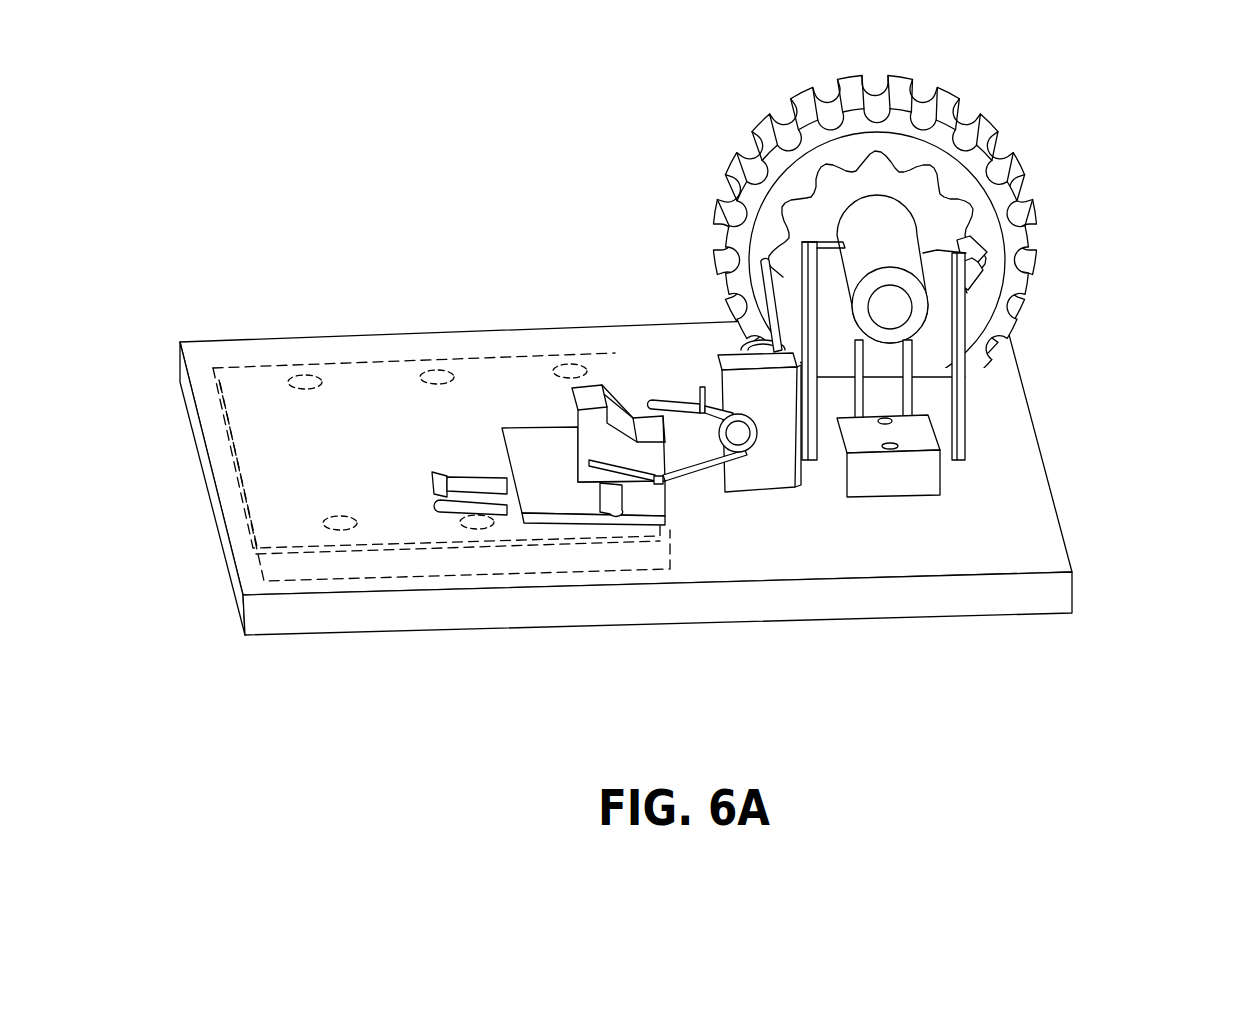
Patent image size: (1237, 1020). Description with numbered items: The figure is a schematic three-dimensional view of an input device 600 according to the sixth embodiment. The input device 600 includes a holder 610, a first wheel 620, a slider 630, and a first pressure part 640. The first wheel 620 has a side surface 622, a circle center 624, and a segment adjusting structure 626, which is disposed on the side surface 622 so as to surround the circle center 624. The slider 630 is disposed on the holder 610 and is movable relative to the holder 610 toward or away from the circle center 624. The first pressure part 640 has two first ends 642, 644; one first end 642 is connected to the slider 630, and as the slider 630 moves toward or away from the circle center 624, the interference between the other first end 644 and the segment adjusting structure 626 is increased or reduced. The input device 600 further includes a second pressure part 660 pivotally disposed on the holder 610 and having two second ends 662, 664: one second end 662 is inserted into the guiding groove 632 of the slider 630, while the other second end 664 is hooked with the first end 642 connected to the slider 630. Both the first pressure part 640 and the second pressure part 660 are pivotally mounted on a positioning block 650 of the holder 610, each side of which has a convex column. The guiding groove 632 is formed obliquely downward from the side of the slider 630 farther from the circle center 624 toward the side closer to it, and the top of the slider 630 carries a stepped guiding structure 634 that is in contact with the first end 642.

The input device 600 is at (330, 136).
The holder 610 is at (403, 615).
The first wheel 620 is at (966, 244).
The side surface 622 is at (984, 156).
The circle center 624 is at (883, 233).
The segment adjusting structure 626 is at (960, 268).
The slider 630 is at (588, 443).
The guiding groove 632 is at (605, 470).
The guiding structure 634 is at (618, 396).
The first pressure part 640 is at (685, 254).
The first end 642 is at (673, 397).
The first end 644 is at (765, 258).
The positioning block 650 is at (777, 430).
The second pressure part 660 is at (673, 583).
The second end 662 is at (670, 478).
The second end 664 is at (700, 447).